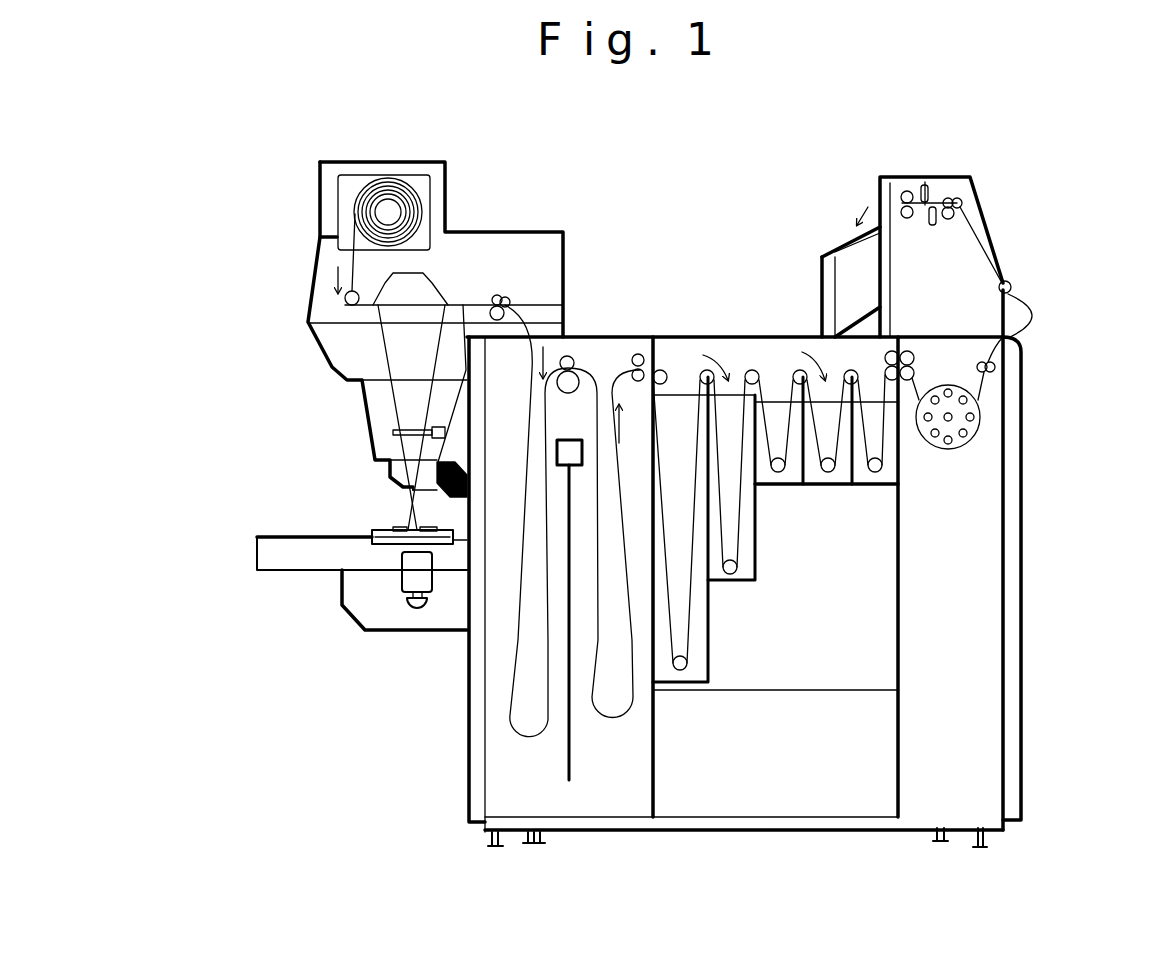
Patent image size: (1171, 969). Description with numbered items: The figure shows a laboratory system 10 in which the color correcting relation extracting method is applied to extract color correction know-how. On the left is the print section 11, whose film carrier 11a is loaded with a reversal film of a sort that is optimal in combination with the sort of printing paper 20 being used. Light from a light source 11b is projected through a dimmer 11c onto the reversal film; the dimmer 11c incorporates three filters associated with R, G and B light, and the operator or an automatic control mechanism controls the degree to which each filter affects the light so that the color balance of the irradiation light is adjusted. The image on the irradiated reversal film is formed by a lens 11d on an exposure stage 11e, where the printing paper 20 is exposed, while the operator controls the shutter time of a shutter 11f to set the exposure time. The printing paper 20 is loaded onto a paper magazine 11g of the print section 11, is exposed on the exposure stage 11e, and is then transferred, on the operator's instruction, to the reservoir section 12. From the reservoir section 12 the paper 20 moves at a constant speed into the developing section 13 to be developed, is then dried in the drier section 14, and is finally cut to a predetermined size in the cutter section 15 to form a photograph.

The laboratory system 10 is at (662, 180).
The print section 11 is at (330, 363).
The film carrier 11a is at (380, 527).
The light source 11b is at (410, 603).
The dimmer 11c is at (410, 578).
The lens 11d is at (397, 478).
The exposure stage 11e is at (407, 310).
The shutter 11f is at (395, 443).
The paper magazine 11g is at (358, 168).
The reservoir section 12 is at (483, 777).
The developing section 13 is at (742, 337).
The drier section 14 is at (1005, 647).
The cutter section 15 is at (992, 238).
The printing paper 20 is at (463, 303).